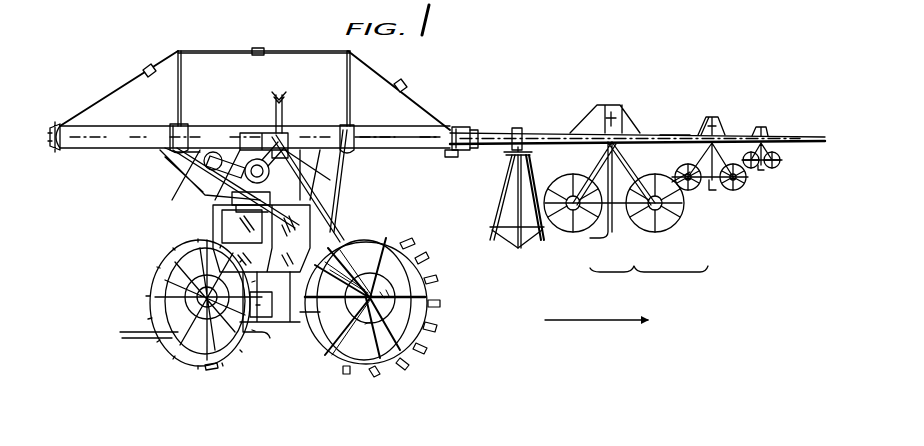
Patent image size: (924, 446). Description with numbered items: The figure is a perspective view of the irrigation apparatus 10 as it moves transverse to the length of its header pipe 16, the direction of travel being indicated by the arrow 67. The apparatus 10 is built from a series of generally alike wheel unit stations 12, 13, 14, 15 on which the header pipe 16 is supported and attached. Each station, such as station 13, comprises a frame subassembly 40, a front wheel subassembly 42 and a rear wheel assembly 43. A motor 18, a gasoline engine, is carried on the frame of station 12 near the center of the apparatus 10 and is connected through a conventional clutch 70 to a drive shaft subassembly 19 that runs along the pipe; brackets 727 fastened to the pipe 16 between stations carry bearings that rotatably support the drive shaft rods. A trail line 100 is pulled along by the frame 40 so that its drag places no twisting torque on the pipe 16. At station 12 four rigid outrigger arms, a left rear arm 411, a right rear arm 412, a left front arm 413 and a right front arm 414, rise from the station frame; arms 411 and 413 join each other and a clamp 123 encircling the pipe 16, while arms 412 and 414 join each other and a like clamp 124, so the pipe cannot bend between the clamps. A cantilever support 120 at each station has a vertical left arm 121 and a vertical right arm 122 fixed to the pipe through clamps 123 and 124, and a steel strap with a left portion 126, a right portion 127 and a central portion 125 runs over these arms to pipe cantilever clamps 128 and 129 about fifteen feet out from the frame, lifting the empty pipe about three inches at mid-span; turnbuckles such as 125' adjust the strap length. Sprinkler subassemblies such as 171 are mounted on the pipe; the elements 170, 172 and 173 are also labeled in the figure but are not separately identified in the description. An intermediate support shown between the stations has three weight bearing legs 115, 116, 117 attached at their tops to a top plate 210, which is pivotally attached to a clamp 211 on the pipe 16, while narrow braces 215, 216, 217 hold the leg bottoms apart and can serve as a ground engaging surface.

The apparatus 10 is at (577, 104).
The wheel unit station 12 is at (388, 366).
The wheel unit station 13 is at (626, 192).
The wheel unit station 14 is at (710, 181).
The wheel unit station 15 is at (774, 163).
The header pipe 16 is at (452, 127).
The motor 18 is at (241, 226).
The drive shaft subassembly 19 is at (667, 130).
The frame subassembly 40 is at (628, 208).
The front wheel subassembly 42 is at (670, 224).
The rear wheel assembly 43 is at (588, 224).
The direction arrow 67 is at (592, 335).
The clutch 70 is at (246, 132).
The trail line 100 is at (150, 334).
The weight bearing leg 115 is at (517, 250).
The weight bearing leg 116 is at (519, 220).
The weight bearing leg 117 is at (492, 228).
The cantilever support 120 is at (248, 73).
The vertical left arm 121 is at (172, 124).
The vertical right arm 122 is at (350, 130).
The clamp 123 is at (172, 151).
The clamp 124 is at (356, 137).
The central strap portion 125 is at (264, 36).
The turnbuckle 125' is at (241, 39).
The left strap portion 126 is at (132, 80).
The right strap portion 127 is at (392, 88).
The pipe cantilever clamp 128 is at (58, 124).
The pipe cantilever clamp 129 is at (446, 148).
The forked rod 170 is at (281, 94).
The sprinkler subassembly 171 is at (610, 124).
The A-frame support 172 is at (714, 132).
The A-frame support 173 is at (763, 127).
The top plate 210 is at (510, 154).
The clamp 211 is at (517, 128).
The narrow brace 215 is at (530, 232).
The narrow brace 216 is at (505, 222).
The narrow brace 217 is at (507, 230).
The left rear arm 411 is at (185, 160).
The right rear arm 412 is at (342, 152).
The left front arm 413 is at (206, 196).
The right front arm 414 is at (340, 190).
The bracket 727 is at (478, 130).